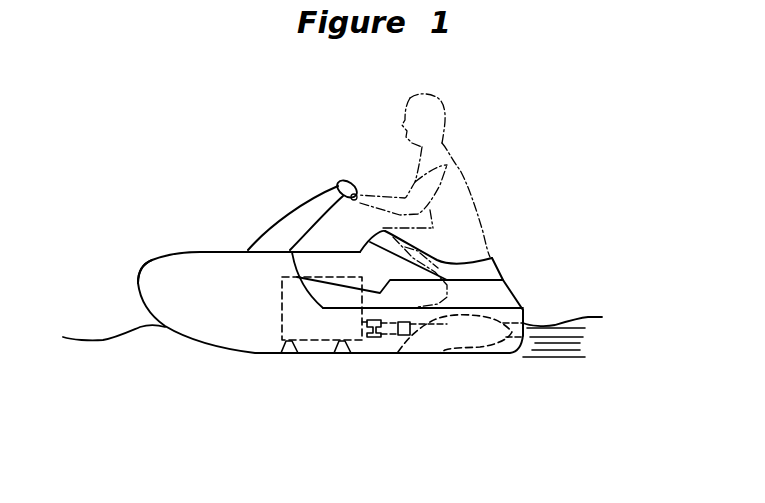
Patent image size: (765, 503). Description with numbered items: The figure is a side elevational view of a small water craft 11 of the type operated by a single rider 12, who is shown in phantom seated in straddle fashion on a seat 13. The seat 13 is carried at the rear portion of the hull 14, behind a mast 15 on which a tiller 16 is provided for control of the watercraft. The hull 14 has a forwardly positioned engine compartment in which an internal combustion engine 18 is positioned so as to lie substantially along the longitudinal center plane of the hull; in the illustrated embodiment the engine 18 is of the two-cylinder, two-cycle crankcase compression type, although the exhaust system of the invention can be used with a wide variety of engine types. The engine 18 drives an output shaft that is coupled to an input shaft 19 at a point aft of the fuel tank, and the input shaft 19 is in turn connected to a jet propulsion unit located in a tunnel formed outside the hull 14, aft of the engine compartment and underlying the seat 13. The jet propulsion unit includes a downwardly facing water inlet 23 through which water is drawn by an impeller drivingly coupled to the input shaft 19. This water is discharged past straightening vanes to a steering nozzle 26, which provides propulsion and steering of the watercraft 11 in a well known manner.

The water craft 11 is at (217, 250).
The rider 12 is at (463, 167).
The seat 13 is at (492, 258).
The hull 14 is at (137, 280).
The mast 15 is at (302, 200).
The tiller 16 is at (345, 178).
The internal combustion engine 18 is at (282, 280).
The input shaft 19 is at (383, 342).
The water inlet 23 is at (432, 345).
The steering nozzle 26 is at (515, 348).